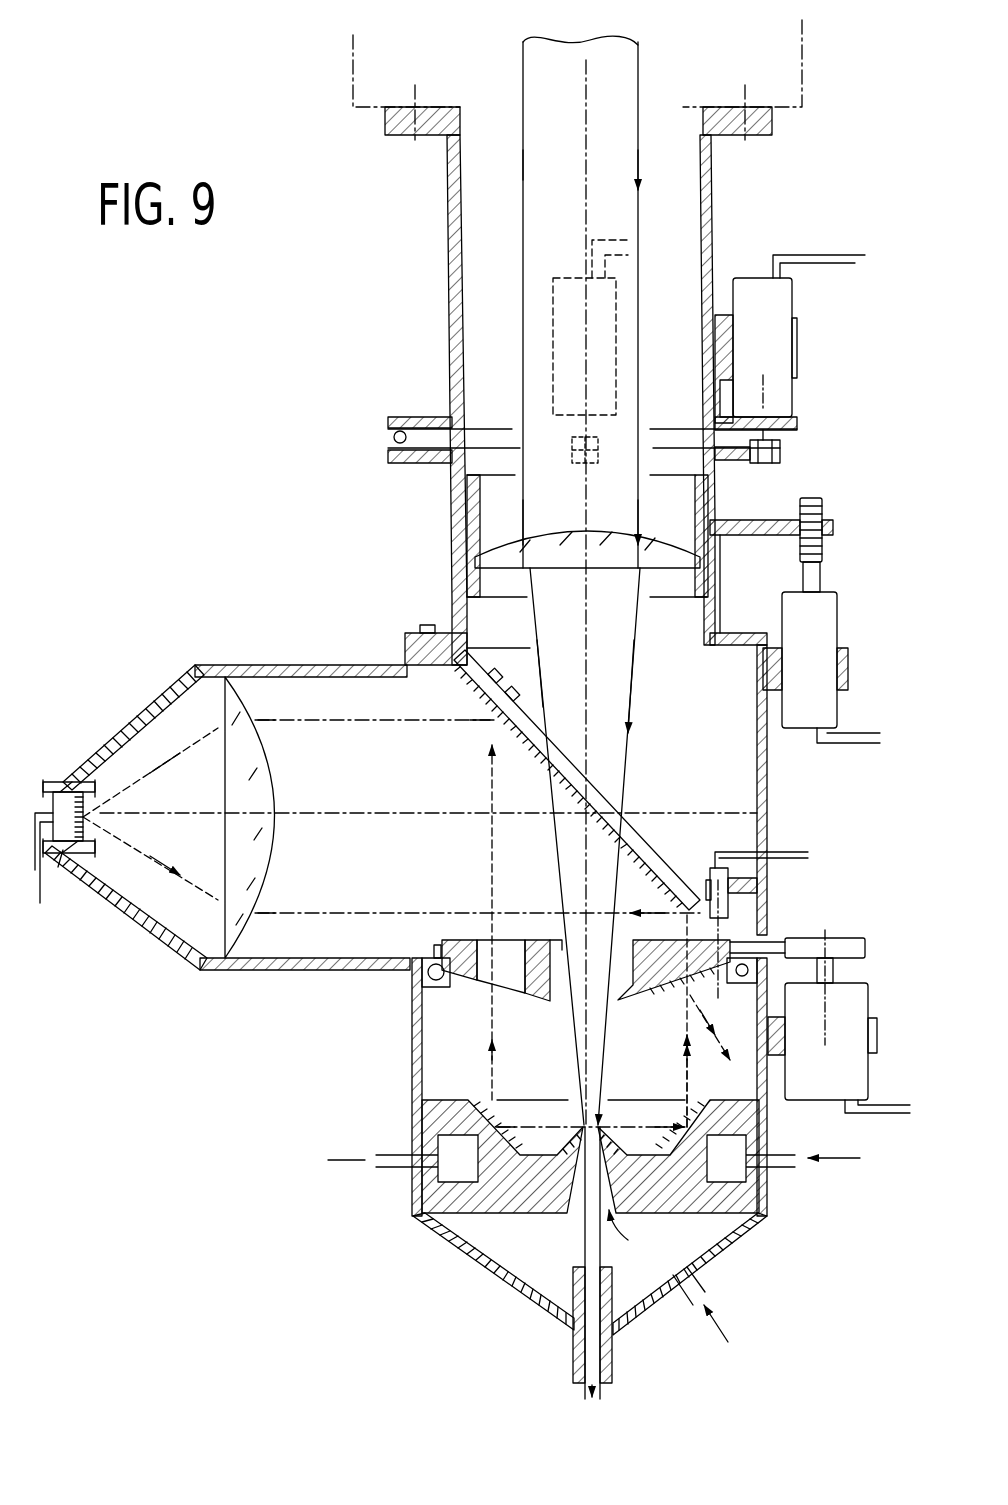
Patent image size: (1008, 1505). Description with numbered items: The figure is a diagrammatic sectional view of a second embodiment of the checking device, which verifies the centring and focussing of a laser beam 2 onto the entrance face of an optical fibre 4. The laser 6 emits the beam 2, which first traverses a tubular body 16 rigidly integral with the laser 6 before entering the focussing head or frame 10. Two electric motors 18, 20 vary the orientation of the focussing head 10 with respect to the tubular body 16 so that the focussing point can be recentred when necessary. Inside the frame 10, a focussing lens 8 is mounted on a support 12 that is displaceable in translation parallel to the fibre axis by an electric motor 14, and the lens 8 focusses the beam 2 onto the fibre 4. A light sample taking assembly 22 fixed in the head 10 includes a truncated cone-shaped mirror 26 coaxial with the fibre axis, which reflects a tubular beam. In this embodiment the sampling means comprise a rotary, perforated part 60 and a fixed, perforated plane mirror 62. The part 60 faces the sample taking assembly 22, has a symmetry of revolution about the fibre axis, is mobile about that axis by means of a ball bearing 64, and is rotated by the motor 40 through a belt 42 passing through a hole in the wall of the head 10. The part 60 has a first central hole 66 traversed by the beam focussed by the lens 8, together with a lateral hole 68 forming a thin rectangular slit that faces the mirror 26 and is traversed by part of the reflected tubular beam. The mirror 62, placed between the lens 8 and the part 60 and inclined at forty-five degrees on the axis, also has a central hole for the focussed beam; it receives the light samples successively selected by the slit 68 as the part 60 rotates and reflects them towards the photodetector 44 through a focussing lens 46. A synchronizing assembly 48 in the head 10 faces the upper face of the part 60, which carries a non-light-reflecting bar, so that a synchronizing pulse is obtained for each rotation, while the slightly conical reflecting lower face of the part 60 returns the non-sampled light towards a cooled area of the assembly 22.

The laser beam 2 is at (640, 95).
The optical fibre 4 is at (585, 1250).
The laser 6 is at (378, 112).
The focussing lens 8 is at (662, 568).
The focussing frame 10 is at (312, 663).
The support 12 is at (467, 510).
The electric motor 14 is at (832, 630).
The tubular body 16 is at (452, 300).
The electric motor 18 is at (553, 330).
The electric motor 20 is at (782, 305).
The light sample taking assembly 22 is at (738, 1193).
The second truncated cone-shaped mirror 26 is at (479, 1102).
The electric motor 40 is at (855, 1077).
The belt 42 is at (772, 948).
The photodetector 44 is at (65, 849).
The focussing lens 46 is at (255, 880).
The synchronizing assembly 48 is at (706, 870).
The rotary perforated part 60 is at (470, 940).
The fixed perforated plane mirror 62 is at (482, 703).
The ball bearing 64 is at (447, 988).
The first central hole 66 is at (632, 997).
The lateral hole 68 is at (505, 950).